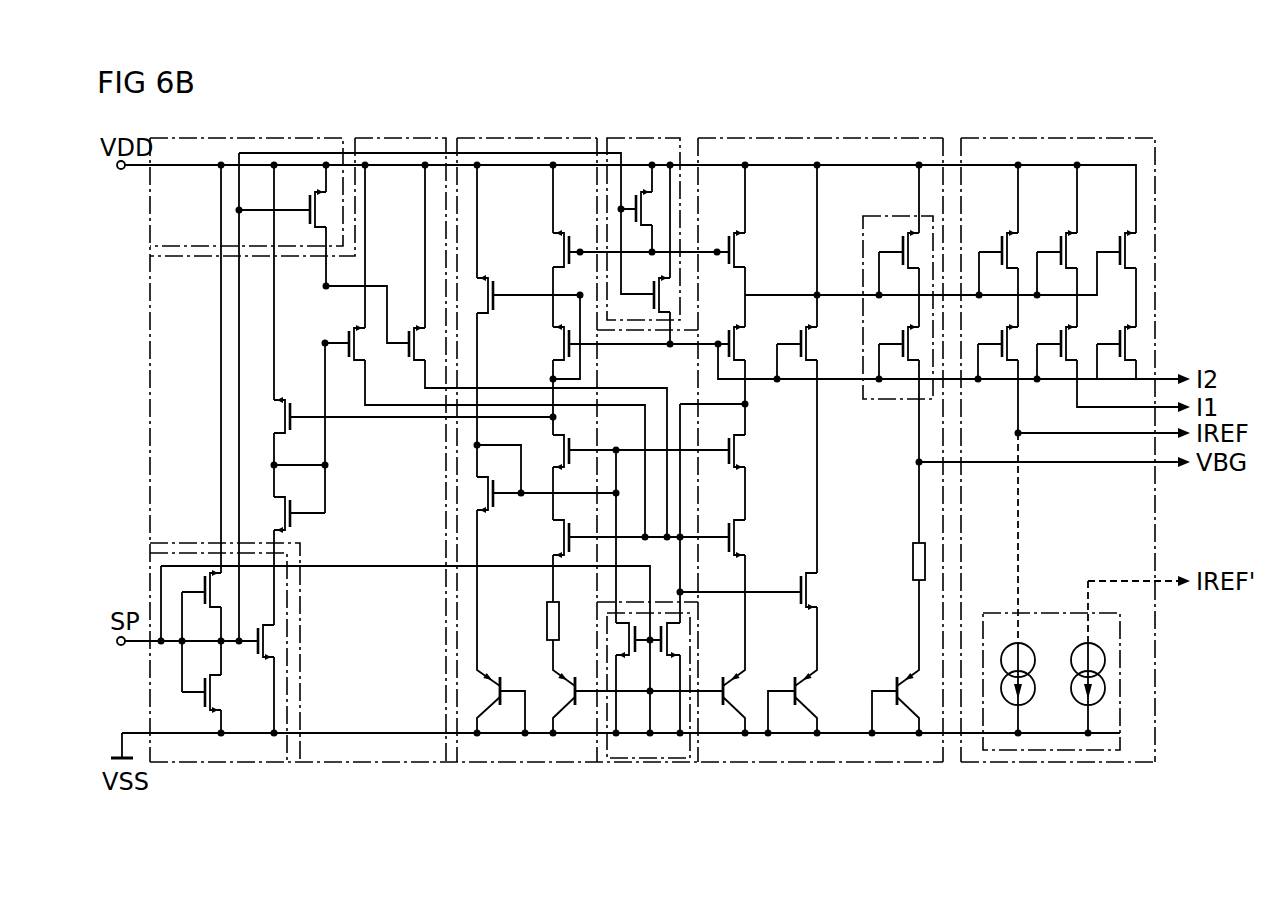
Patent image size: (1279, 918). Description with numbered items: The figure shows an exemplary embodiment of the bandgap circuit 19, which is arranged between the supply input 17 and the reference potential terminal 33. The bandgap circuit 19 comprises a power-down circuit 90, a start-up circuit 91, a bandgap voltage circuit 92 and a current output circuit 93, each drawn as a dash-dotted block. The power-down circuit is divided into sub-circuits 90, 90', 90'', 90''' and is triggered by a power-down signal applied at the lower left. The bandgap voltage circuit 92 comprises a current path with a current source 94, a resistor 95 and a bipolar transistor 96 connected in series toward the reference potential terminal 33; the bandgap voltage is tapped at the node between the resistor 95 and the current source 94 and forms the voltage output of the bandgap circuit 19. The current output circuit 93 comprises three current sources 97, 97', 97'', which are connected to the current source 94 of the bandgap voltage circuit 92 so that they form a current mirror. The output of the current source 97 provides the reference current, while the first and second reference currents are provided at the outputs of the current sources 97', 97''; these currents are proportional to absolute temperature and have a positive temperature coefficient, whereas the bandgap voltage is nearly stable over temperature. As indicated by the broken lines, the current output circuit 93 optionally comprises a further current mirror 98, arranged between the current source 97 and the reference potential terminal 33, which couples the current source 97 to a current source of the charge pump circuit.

The supply input 17 is at (125, 171).
The bandgap circuit 19 is at (1187, 136).
The reference potential terminal 33 is at (113, 755).
The power-down circuit 90 is at (225, 680).
The power-down sub-circuit 90' is at (647, 710).
The power-down sub-circuit 90'' is at (246, 165).
The power-down sub-circuit 90''' is at (649, 207).
The start-up circuit 91 is at (386, 137).
The bandgap voltage circuit 92 is at (550, 137).
The current output circuit 93 is at (1064, 763).
The current source 94 is at (878, 402).
The resistor 95 is at (912, 562).
The bipolar transistor 96 is at (893, 682).
The current source 97 is at (998, 226).
The current source 97' is at (1060, 226).
The current source 97'' is at (1120, 226).
The further current mirror 98 is at (1062, 612).